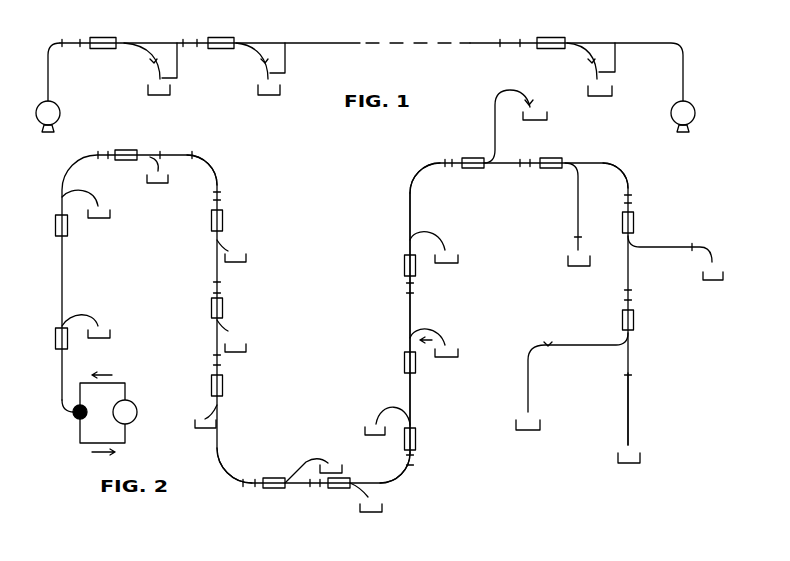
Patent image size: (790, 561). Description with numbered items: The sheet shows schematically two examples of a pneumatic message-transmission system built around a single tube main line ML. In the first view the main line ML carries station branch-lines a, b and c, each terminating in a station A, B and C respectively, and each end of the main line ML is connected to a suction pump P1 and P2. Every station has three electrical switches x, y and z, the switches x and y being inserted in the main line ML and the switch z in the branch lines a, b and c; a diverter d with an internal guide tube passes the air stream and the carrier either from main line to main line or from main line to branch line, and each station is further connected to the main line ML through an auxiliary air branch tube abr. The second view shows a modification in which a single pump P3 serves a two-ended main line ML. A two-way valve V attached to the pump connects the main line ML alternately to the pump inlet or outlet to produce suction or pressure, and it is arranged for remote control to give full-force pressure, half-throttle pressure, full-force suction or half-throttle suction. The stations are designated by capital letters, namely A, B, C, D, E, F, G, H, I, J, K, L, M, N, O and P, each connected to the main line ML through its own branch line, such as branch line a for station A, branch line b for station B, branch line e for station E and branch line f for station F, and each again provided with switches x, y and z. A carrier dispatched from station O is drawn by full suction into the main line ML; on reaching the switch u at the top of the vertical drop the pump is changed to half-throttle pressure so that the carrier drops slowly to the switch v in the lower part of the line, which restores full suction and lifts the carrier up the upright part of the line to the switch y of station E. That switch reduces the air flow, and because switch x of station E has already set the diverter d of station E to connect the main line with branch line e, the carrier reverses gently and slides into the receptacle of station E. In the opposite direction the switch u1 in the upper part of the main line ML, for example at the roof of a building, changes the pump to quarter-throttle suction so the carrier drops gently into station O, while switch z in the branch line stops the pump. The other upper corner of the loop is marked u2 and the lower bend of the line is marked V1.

In FIG. 1, the main line ML is at (318, 42).
In FIG. 2, the main line ML is at (408, 218).
In FIG. 1, the suction pump P1 is at (58, 87).
In FIG. 1, the suction pump P2 is at (673, 116).
In FIG. 2, the pump P3 is at (137, 410).
In FIG. 1, the switch y is at (280, 32).
In FIG. 2, the switch y is at (422, 216).
In FIG. 1, the switch x is at (299, 32).
In FIG. 2, the switch x is at (422, 223).
In FIG. 1, the diverter d is at (327, 33).
In FIG. 2, the diverter d is at (424, 234).
In FIG. 1, the branch line a is at (143, 53).
In FIG. 2, the branch line a is at (94, 317).
In FIG. 1, the branch line b is at (252, 53).
In FIG. 2, the branch line b is at (94, 200).
In FIG. 1, the branch line c is at (582, 53).
In FIG. 2, the branch line c is at (152, 183).
In FIG. 1, the switch z is at (377, 58).
In FIG. 2, the switch z is at (385, 211).
In FIG. 1, the auxiliary air branch tube abr is at (179, 63).
In FIG. 1, the station A is at (152, 94).
In FIG. 2, the station A is at (105, 338).
In FIG. 1, the station B is at (262, 94).
In FIG. 2, the station B is at (105, 218).
In FIG. 1, the station C is at (593, 96).
In FIG. 2, the station D is at (238, 254).
In FIG. 2, the station E is at (241, 349).
In FIG. 2, the station F is at (210, 428).
In FIG. 2, the station G is at (321, 471).
In FIG. 2, the station H is at (374, 501).
In FIG. 2, the station I is at (381, 423).
In FIG. 2, the station J is at (440, 357).
In FIG. 2, the station K is at (453, 265).
In FIG. 2, the station L is at (522, 126).
In FIG. 2, the station M is at (577, 224).
In FIG. 2, the station N is at (704, 280).
In FIG. 2, the station O is at (521, 430).
In FIG. 2, the station P is at (637, 421).
In FIG. 2, the switch u is at (425, 171).
In FIG. 2, the switch u1 is at (615, 167).
In FIG. 2, the line junction u2 is at (202, 158).
In FIG. 2, the two-way valve V is at (395, 475).
In FIG. 2, the connection point V1 is at (232, 475).
In FIG. 2, the switch v is at (74, 417).
In FIG. 2, the branch line e is at (242, 324).
In FIG. 2, the branch line f is at (205, 412).